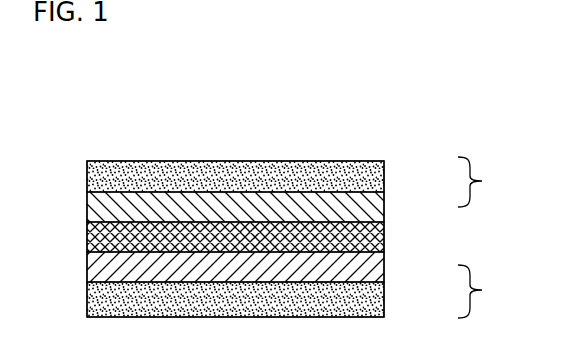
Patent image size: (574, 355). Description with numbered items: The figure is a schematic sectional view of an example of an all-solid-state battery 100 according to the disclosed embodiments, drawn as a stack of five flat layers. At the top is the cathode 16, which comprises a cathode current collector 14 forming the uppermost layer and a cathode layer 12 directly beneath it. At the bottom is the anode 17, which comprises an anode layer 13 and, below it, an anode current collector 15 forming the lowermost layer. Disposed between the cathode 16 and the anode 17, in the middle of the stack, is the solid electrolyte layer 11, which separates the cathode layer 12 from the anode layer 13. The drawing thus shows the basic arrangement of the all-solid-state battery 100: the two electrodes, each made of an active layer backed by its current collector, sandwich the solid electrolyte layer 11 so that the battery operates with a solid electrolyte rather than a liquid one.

The all-solid-state battery 100 is at (108, 64).
The solid electrolyte layer 11 is at (385, 230).
The cathode layer 12 is at (385, 196).
The anode layer 13 is at (385, 265).
The cathode current collector 14 is at (385, 174).
The anode current collector 15 is at (385, 295).
The cathode 16 is at (486, 182).
The anode 17 is at (486, 291).